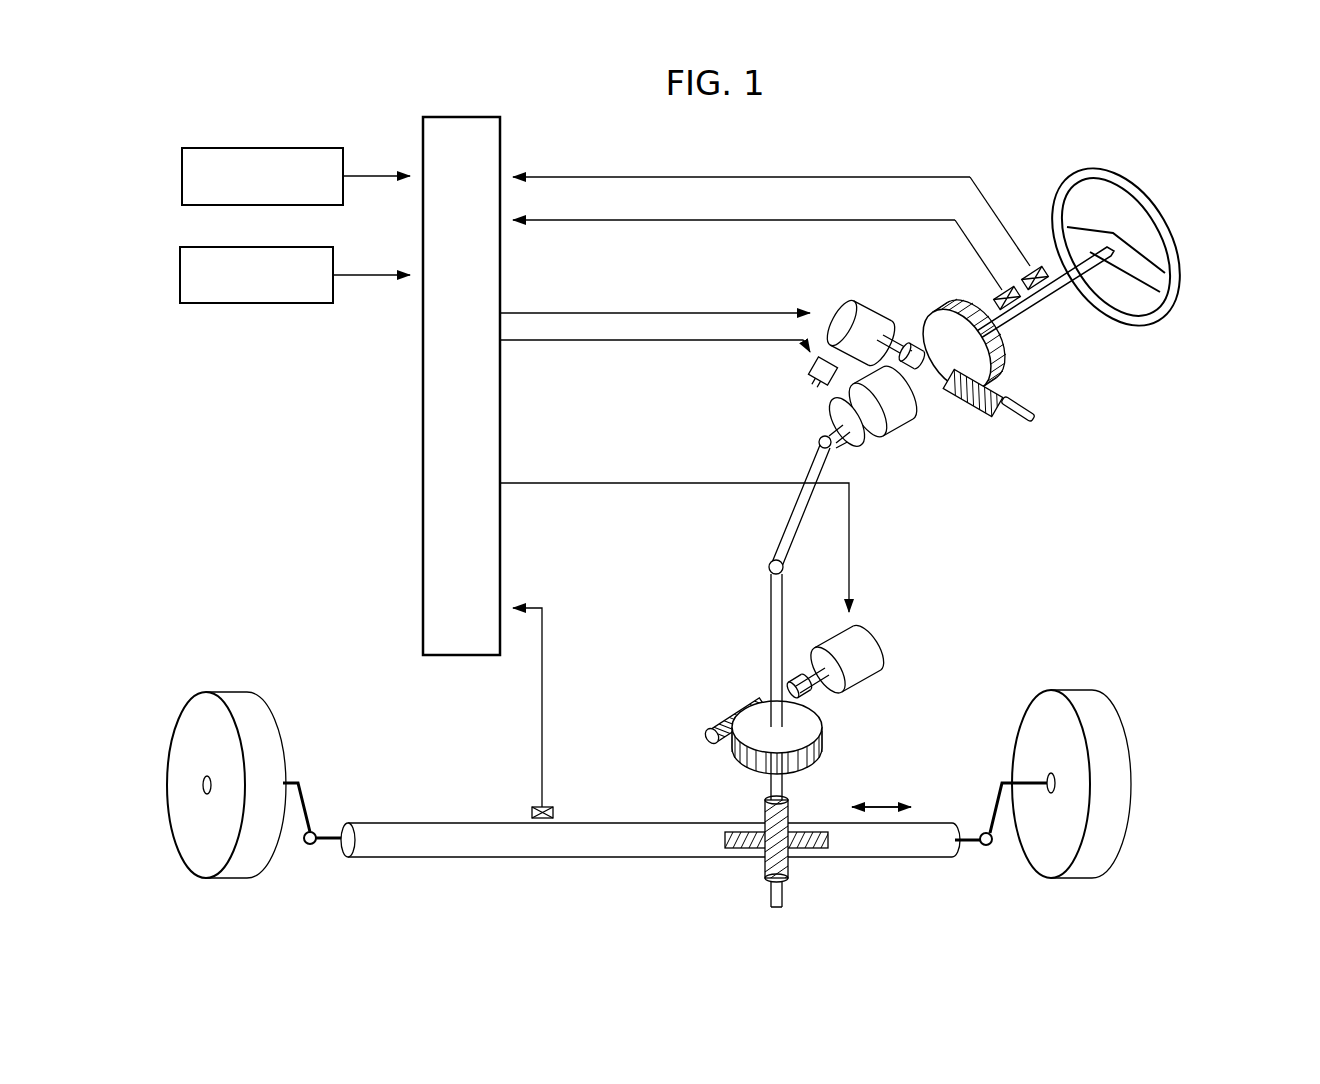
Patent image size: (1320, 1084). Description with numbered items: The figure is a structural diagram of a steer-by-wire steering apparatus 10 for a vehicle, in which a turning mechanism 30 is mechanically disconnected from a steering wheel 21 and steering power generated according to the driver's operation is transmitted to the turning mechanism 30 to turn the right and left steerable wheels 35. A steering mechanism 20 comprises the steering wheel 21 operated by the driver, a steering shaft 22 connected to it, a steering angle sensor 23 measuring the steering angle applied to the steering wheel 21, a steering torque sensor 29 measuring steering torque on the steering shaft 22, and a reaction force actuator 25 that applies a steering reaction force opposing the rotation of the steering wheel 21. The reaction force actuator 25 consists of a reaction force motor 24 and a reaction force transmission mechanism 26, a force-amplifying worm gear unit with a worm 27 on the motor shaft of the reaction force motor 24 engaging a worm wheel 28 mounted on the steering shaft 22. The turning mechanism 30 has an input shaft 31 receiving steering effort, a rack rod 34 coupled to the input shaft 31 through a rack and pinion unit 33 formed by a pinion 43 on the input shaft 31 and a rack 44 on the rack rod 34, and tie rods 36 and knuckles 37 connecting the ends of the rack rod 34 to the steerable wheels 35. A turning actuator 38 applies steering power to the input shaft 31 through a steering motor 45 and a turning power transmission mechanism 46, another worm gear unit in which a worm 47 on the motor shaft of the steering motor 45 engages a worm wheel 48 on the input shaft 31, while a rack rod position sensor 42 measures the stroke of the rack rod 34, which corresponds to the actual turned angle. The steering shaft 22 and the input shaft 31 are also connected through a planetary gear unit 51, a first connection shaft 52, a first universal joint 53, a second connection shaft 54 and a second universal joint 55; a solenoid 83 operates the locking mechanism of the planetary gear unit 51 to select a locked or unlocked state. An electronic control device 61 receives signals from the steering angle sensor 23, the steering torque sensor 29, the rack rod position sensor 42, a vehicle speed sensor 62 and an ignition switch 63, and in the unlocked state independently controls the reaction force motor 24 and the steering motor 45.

The steering apparatus 10 is at (1208, 168).
The steering mechanism 20 is at (1180, 327).
The steering wheel 21 is at (1112, 172).
The steering shaft 22 is at (1050, 294).
The steering angle sensor 23 is at (1036, 268).
The reaction force motor 24 is at (857, 316).
The reaction force actuator 25 is at (912, 305).
The reaction force transmission mechanism 26 is at (1020, 425).
The worm 27 is at (988, 410).
The worm wheel 28 is at (953, 400).
The steering torque sensor 29 is at (998, 293).
The turning mechanism 30 is at (1116, 684).
The input shaft 31 is at (771, 606).
The rack and pinion unit 33 is at (765, 874).
The rack rod 34 is at (440, 822).
The steerable wheels 35 is at (260, 713).
The tie rods 36 is at (327, 834).
The knuckles 37 is at (293, 782).
The turning actuator 38 is at (896, 628).
The rack rod position sensor 42 is at (531, 810).
The pinion 43 is at (790, 872).
The rack 44 is at (823, 848).
The steering motor 45 is at (866, 665).
The turning power transmission mechanism 46 is at (718, 700).
The worm 47 is at (720, 717).
The worm wheel 48 is at (722, 770).
The planetary gear unit 51 is at (900, 449).
The first connection shaft 52 is at (850, 452).
The first universal joint 53 is at (819, 440).
The second connection shaft 54 is at (815, 468).
The second universal joint 55 is at (771, 562).
The electronic control device 61 is at (423, 133).
The vehicle speed sensor 62 is at (182, 178).
The ignition switch 63 is at (180, 275).
The solenoid 83 is at (808, 379).